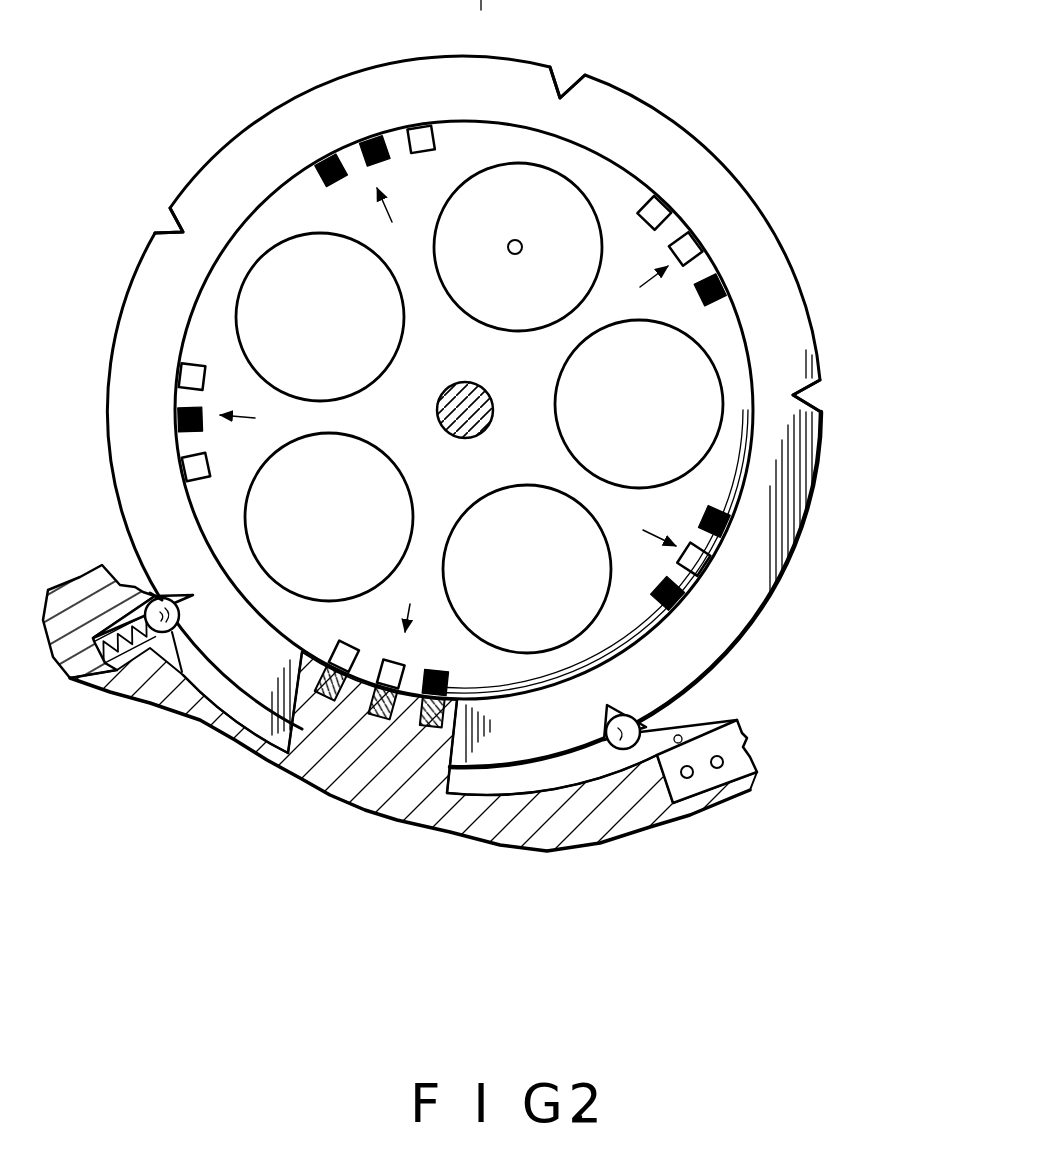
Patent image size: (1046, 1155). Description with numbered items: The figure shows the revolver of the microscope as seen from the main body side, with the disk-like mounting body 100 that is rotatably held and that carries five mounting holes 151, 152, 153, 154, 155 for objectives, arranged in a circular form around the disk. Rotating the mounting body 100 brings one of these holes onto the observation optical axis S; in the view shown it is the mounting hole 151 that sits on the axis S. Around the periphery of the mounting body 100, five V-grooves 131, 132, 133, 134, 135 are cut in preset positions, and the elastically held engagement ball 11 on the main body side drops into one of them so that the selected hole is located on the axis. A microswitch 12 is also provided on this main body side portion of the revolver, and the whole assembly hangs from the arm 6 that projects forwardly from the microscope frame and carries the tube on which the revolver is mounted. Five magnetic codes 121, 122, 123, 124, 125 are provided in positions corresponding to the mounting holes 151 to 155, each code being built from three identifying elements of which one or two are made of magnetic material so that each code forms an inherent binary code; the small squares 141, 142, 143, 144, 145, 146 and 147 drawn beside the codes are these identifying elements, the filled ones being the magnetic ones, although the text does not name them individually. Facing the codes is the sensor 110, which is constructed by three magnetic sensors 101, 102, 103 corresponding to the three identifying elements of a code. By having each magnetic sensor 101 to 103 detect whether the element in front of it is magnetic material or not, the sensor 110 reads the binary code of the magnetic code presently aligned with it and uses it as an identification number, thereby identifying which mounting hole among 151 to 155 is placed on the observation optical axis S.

The arm 6 is at (570, 843).
The engagement ball 11 is at (183, 612).
The microswitch 12 is at (752, 768).
The mounting body 100 is at (597, 177).
The magnetic sensor 101 is at (330, 713).
The magnetic sensor 102 is at (380, 712).
The magnetic sensor 103 is at (437, 715).
The sensor 110 is at (493, 902).
The magnetic code 121 is at (410, 602).
The magnetic code 122 is at (261, 418).
The magnetic code 123 is at (399, 220).
The magnetic code 124 is at (633, 289).
The magnetic code 125 is at (639, 529).
The V-groove 131 is at (615, 710).
The V-groove 132 is at (827, 394).
The V-groove 133 is at (573, 80).
The V-groove 134 is at (168, 222).
The V-groove 135 is at (168, 590).
The magnet mark 141 is at (447, 676).
The magnet mark 142 is at (175, 423).
The magnet mark 143 is at (325, 160).
The magnet mark 144 is at (370, 142).
The magnet mark 145 is at (703, 297).
The magnet mark 146 is at (705, 517).
The magnet mark 147 is at (660, 590).
The mounting hole 151 is at (468, 305).
The mounting hole 152 is at (562, 385).
The mounting hole 153 is at (535, 490).
The mounting hole 154 is at (402, 494).
The mounting hole 155 is at (369, 374).
The observation optical axis S is at (523, 247).